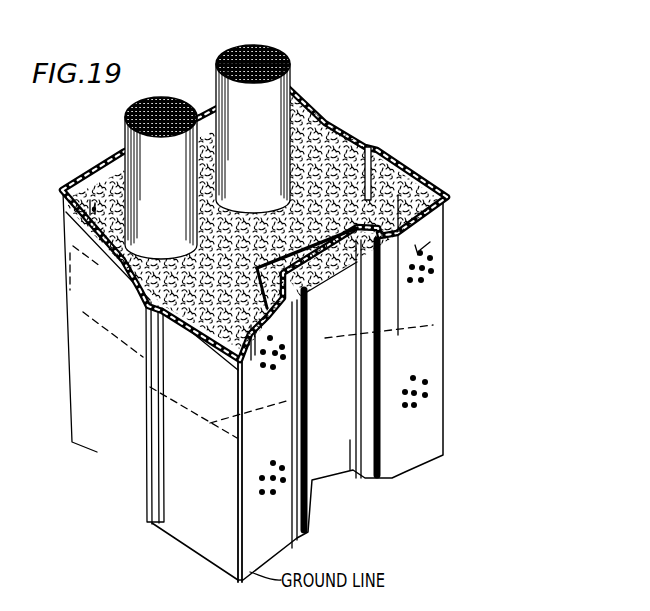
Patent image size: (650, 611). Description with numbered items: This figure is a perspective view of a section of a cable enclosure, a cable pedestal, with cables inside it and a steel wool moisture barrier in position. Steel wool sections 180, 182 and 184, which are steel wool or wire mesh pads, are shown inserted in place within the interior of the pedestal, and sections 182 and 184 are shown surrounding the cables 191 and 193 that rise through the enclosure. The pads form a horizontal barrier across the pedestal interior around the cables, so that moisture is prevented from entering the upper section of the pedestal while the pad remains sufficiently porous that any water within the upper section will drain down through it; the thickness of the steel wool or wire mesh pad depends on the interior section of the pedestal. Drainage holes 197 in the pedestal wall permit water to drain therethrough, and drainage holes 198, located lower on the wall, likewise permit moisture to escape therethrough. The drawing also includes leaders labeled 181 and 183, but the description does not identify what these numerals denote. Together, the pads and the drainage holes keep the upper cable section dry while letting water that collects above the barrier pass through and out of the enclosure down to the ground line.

The steel wool section 180 is at (290, 300).
The tray 181 is at (258, 243).
The steel wool section 182 is at (293, 177).
The partition 183 is at (325, 178).
The steel wool section 184 is at (333, 210).
The cable 191 is at (146, 96).
The cable 193 is at (267, 108).
The drainage holes 197 is at (94, 207).
The drainage holes 198 is at (428, 383).